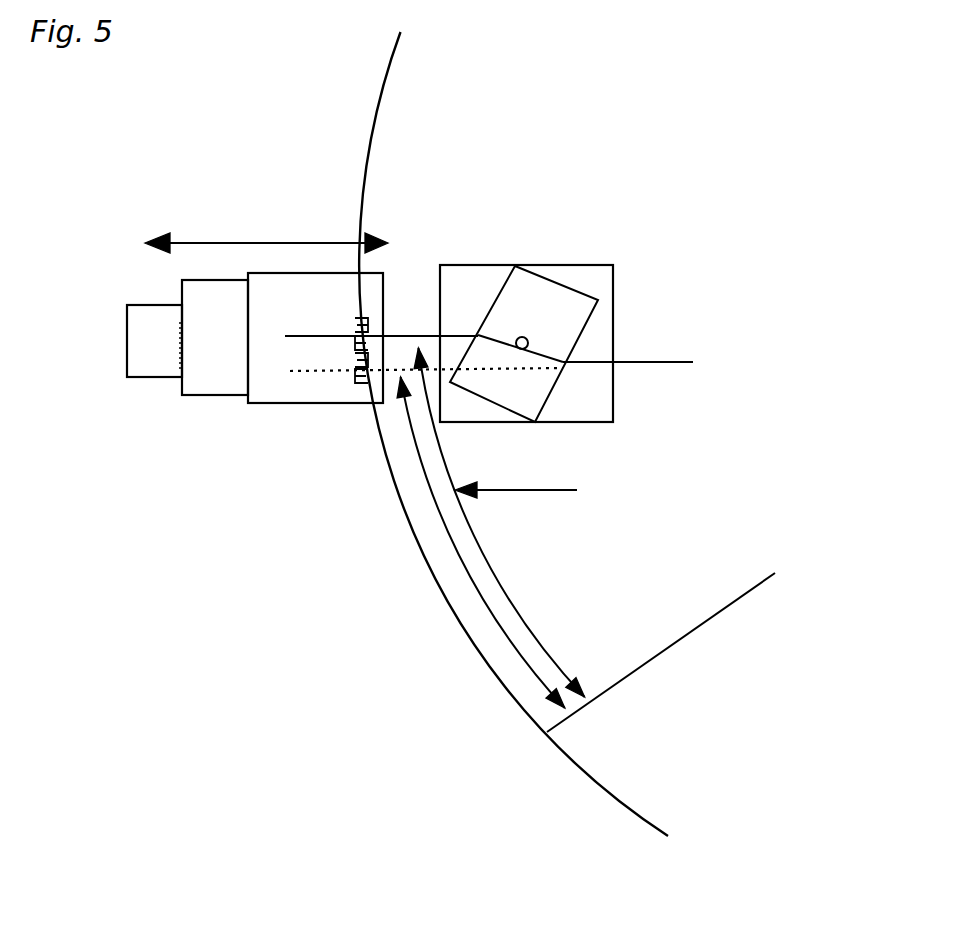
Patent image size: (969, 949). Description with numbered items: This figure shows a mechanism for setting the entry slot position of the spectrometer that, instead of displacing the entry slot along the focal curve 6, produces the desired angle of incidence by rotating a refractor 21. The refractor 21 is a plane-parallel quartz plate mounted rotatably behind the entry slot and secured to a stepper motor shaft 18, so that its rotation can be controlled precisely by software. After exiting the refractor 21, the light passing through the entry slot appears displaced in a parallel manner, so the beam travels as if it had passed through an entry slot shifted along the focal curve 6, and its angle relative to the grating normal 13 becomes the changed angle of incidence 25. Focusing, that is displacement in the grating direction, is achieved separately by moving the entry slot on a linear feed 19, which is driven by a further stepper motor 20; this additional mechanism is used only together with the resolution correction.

The focal curve 6 is at (544, 457).
The grating normal 13 is at (678, 638).
The stepper motor shaft 18 is at (530, 338).
The linear feed 19 is at (273, 403).
The stepper motor 20 is at (471, 265).
The refractor 21 is at (524, 344).
The changed angle of incidence ε' 25 is at (450, 540).